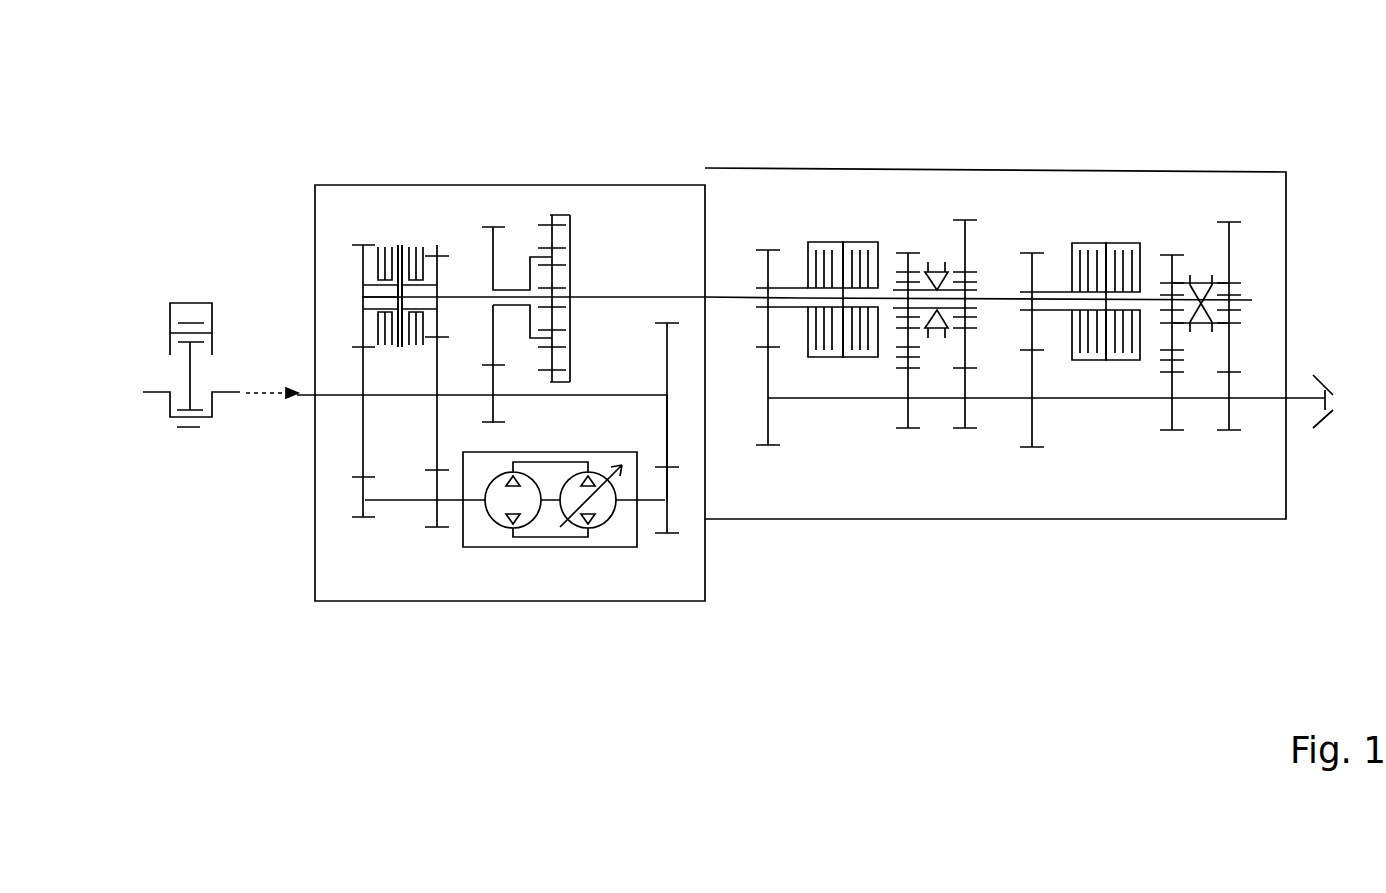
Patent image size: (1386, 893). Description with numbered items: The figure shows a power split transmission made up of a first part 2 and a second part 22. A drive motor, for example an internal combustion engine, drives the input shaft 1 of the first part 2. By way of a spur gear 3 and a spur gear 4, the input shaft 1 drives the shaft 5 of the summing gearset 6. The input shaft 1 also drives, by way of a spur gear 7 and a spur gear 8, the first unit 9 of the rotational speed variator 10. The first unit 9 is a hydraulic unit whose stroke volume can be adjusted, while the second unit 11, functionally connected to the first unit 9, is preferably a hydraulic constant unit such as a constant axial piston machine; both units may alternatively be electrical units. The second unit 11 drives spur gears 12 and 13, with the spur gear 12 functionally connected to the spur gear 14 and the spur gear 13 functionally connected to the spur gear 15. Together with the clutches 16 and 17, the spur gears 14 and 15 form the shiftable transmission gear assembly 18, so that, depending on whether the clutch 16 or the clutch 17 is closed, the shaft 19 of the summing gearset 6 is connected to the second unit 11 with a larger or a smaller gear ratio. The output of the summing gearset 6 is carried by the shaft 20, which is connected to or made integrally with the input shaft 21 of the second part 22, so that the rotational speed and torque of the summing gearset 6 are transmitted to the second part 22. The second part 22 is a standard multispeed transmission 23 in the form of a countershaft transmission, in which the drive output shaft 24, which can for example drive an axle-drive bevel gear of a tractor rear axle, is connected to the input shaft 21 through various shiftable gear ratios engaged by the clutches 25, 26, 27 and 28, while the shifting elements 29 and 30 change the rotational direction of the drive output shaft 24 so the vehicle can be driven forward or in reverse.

The input shaft 1 is at (297, 395).
The first part 2 is at (313, 553).
The spur gear 3 is at (490, 412).
The spur gear 4 is at (511, 289).
The shaft 5 is at (516, 288).
The summing gearset 6 is at (573, 205).
The spur gear 7 is at (668, 432).
The spur gear 8 is at (667, 535).
The first unit 9 is at (600, 537).
The rotational speed variator 10 is at (545, 548).
The second unit 11 is at (497, 537).
The spur gear 12 is at (437, 530).
The spur gear 13 is at (363, 520).
The spur gear 14 is at (400, 232).
The spur gear 15 is at (360, 262).
The clutch 16 is at (328, 168).
The clutch 17 is at (377, 233).
The shiftable transmission gear assembly 18 is at (342, 284).
The shaft 19 is at (463, 296).
The shaft 20 is at (653, 296).
The input shaft 21 is at (718, 292).
The second part 22 is at (990, 520).
The multispeed transmission 23 is at (1005, 196).
The drive output shaft 24 is at (1300, 393).
The clutch 25 is at (823, 236).
The clutch 26 is at (867, 236).
The clutch 27 is at (1098, 238).
The clutch 28 is at (1132, 238).
The shifting element 29 is at (937, 263).
The shifting element 30 is at (1200, 275).